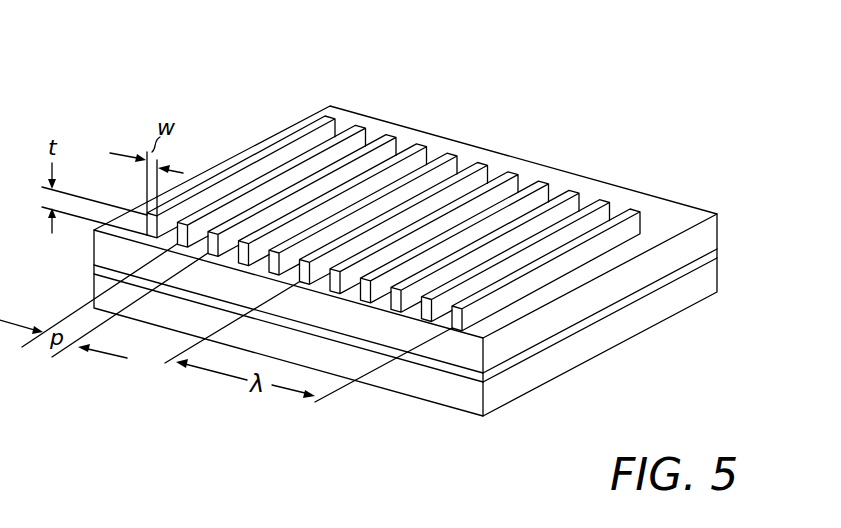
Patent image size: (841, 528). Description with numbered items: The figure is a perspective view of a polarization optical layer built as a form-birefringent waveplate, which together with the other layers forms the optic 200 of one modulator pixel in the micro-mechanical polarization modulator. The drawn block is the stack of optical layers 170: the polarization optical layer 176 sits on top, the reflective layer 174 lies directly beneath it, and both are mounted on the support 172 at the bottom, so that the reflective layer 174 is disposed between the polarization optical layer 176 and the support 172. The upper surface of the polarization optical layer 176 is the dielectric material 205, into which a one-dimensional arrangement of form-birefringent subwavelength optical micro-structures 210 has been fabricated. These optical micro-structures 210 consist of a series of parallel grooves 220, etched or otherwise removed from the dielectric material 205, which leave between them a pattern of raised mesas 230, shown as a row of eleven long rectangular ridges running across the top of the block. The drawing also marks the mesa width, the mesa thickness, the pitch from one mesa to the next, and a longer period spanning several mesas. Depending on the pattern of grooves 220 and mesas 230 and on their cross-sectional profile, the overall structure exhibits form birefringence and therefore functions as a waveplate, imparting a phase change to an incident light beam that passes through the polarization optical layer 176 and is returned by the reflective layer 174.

The optic 200 is at (280, 88).
The optical layers 170 is at (87, 235).
The support 172 is at (703, 285).
The reflective layer 174 is at (717, 252).
The polarization optical layer 176 is at (728, 213).
The dielectric material 205 is at (626, 194).
The optical micro-structures 210 is at (500, 164).
The grooves 220 is at (434, 150).
The mesas 230 is at (397, 127).